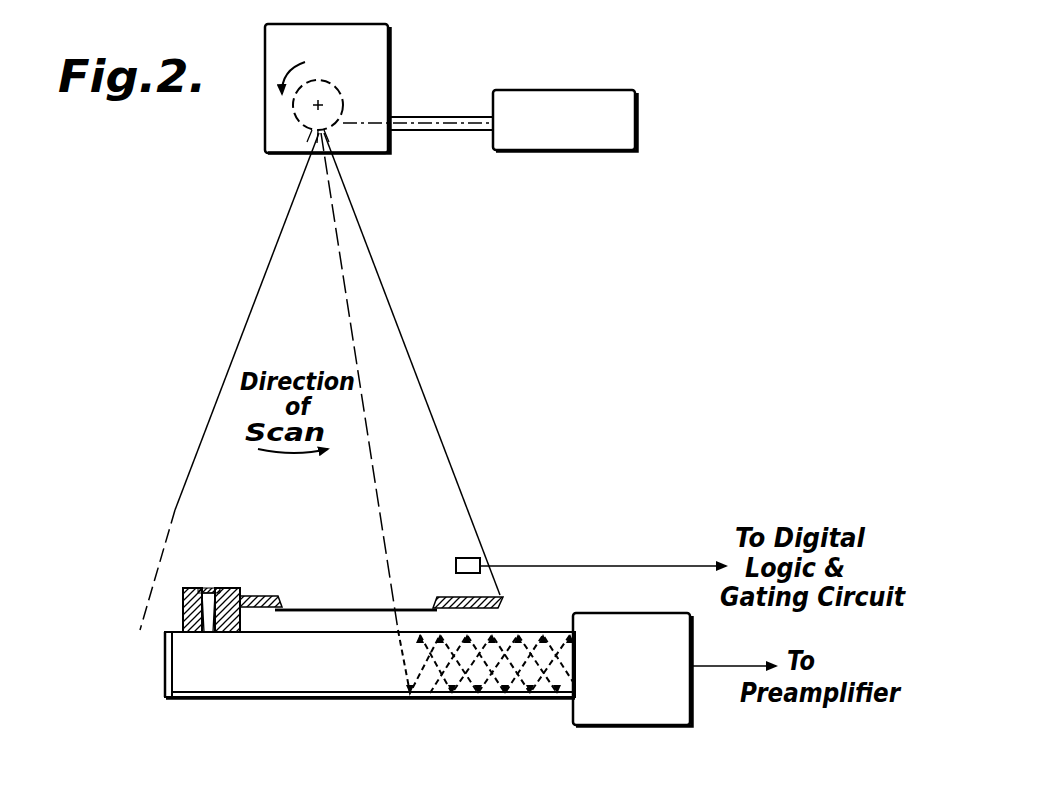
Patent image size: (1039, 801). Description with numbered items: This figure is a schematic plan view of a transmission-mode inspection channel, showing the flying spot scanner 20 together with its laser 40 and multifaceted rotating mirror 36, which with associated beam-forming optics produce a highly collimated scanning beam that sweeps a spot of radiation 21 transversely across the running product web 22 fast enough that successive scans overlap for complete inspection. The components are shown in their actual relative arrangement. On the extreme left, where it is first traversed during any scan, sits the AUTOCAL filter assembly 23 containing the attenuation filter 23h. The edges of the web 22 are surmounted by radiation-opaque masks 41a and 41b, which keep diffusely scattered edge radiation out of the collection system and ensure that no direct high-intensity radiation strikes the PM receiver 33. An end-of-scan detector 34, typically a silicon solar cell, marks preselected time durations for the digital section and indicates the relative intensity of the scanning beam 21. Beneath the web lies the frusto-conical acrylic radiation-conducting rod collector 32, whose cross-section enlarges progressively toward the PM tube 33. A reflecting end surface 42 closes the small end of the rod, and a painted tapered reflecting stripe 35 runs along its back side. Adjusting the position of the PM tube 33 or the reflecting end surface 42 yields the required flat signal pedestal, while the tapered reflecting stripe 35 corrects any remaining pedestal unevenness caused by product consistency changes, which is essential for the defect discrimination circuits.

The flying spot scanner 20 is at (262, 120).
The multifaceted rotating mirror reflector 36 is at (337, 88).
The laser source 40 is at (490, 122).
The radiation-conducting rod collector 32 is at (378, 628).
The reflecting end surface 42 is at (163, 670).
The tapered reflecting stripe 35 is at (410, 698).
The spot of radiation 21 is at (403, 608).
The product web 22 is at (337, 618).
The AUTOCAL filter assembly 23 is at (180, 597).
The attenuation filter 23h is at (213, 584).
The radiation-opaque mask 41a is at (268, 583).
The radiation-opaque mask 41b is at (492, 606).
The end-of-scan detector 34 is at (560, 540).
The PM tube 33 is at (680, 727).